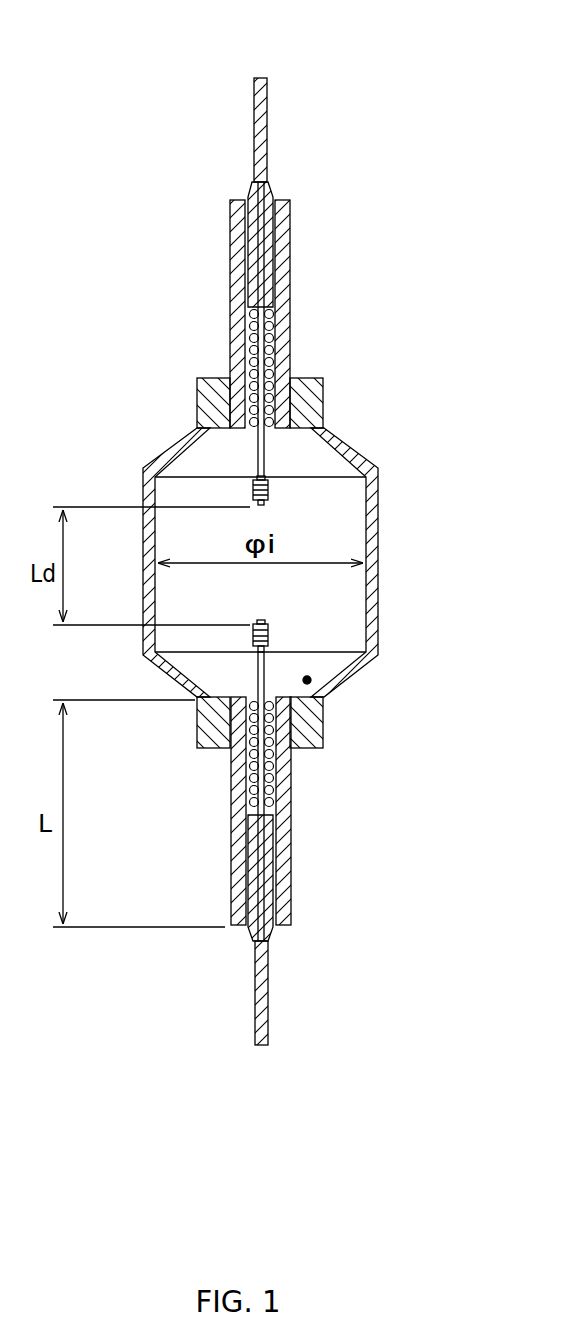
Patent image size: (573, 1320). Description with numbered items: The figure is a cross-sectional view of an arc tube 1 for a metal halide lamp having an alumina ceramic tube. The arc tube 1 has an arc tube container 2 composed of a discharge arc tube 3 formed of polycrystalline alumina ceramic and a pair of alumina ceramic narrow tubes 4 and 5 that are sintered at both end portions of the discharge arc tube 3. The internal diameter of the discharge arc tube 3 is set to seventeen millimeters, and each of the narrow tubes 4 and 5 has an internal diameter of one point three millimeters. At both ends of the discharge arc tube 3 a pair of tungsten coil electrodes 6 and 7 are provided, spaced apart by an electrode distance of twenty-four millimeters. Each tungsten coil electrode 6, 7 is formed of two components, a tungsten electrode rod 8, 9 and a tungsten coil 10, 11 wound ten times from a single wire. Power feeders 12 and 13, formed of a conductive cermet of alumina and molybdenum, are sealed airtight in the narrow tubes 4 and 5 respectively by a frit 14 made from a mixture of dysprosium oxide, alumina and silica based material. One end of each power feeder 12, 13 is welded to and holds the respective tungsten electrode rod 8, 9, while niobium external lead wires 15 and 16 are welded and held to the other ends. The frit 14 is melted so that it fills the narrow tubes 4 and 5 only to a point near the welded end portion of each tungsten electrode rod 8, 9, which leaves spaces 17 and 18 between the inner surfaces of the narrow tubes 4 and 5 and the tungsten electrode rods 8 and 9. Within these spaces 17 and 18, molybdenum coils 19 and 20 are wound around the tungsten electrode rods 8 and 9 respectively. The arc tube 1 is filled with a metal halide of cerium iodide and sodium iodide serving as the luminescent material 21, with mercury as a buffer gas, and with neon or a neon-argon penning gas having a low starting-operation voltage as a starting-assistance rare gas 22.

The arc tube 1 is at (340, 106).
The arc tube container 2 is at (352, 428).
The discharge arc tube 3 is at (373, 535).
The narrow tube 4 is at (290, 275).
The narrow tube 5 is at (292, 850).
The tungsten coil electrode 6 is at (279, 488).
The tungsten coil electrode 7 is at (282, 632).
The tungsten electrode rod 8 is at (258, 462).
The tungsten electrode rod 9 is at (258, 676).
The tungsten coil 10 is at (250, 478).
The tungsten coil 11 is at (253, 636).
The power feeder 12 is at (258, 223).
The power feeder 13 is at (260, 880).
The frit 14 is at (290, 222).
The external lead wire 15 is at (254, 122).
The external lead wire 16 is at (255, 1000).
The space 17 is at (290, 338).
The space 18 is at (292, 757).
The molybdenum coil 19 is at (250, 330).
The molybdenum coil 20 is at (255, 780).
The luminescent material 21 is at (308, 680).
The starting-assistance rare gas 22 is at (345, 578).